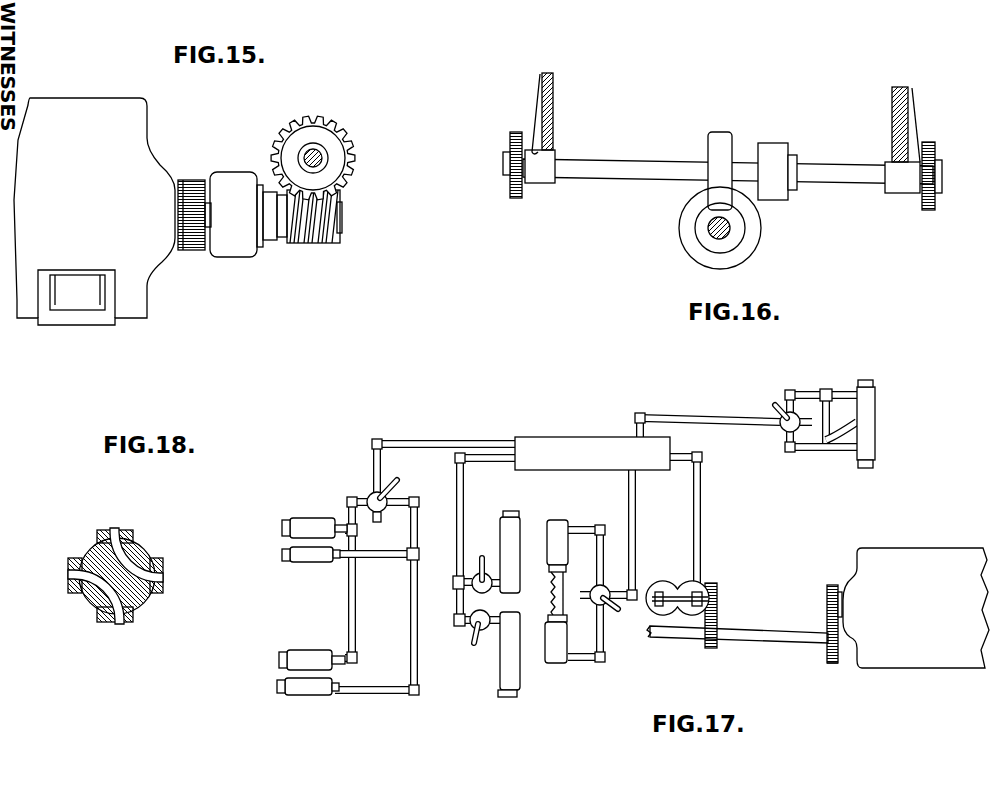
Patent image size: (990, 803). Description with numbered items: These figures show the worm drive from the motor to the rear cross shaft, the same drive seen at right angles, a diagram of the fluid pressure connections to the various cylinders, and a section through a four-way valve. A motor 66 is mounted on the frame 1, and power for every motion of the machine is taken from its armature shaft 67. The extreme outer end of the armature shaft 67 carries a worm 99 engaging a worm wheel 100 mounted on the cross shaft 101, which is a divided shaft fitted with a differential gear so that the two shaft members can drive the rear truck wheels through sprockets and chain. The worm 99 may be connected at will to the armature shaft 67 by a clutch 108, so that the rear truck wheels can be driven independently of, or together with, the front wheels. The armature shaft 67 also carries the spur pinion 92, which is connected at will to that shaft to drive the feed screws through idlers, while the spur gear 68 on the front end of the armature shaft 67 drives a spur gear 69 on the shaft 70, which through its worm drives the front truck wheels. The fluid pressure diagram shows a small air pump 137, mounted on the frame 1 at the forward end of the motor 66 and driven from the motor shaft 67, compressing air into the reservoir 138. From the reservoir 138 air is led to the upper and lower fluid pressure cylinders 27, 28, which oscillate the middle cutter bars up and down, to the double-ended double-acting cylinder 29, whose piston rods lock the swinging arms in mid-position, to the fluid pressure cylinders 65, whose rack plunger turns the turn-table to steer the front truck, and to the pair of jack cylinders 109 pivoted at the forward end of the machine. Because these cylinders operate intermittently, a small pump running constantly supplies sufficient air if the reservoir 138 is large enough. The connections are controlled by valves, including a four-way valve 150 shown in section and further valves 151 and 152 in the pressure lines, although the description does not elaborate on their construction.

In FIG. 16, the frame 1 is at (553, 100).
In FIG. 17, the upper fluid pressure cylinders 27 is at (318, 528).
In FIG. 17, the lower fluid pressure cylinders 28 is at (300, 555).
In FIG. 17, the double-ended double-acting fluid pressure cylinder 29 is at (868, 437).
In FIG. 17, the fluid pressure cylinders 65 is at (557, 535).
In FIG. 15, the motor 66 is at (94, 211).
In FIG. 17, the motor 66 is at (916, 608).
In FIG. 15, the armature shaft 67 is at (208, 250).
In FIG. 16, the armature shaft 67 is at (728, 233).
In FIG. 17, the spur gear 68 is at (833, 585).
In FIG. 17, the spur gear 69 is at (833, 663).
In FIG. 17, the shaft 70 is at (775, 633).
In FIG. 15, the spur pinion 92 is at (193, 180).
In FIG. 15, the worm 99 is at (322, 235).
In FIG. 15, the worm wheel 100 is at (338, 128).
In FIG. 16, the worm wheel 100 is at (720, 157).
In FIG. 15, the cross shaft 101 is at (323, 158).
In FIG. 16, the cross shaft 101 is at (623, 167).
In FIG. 15, the clutch 108 is at (233, 190).
In FIG. 16, the clutch 108 is at (690, 210).
In FIG. 17, the jack cylinders 109 is at (517, 538).
In FIG. 17, the air pump 137 is at (683, 587).
In FIG. 17, the reservoir 138 is at (592, 453).
In FIG. 18, the valve 150 is at (147, 555).
In FIG. 17, the valve 150 is at (373, 492).
In FIG. 17, the valve 151 is at (482, 556).
In FIG. 17, the valve 152 is at (477, 629).